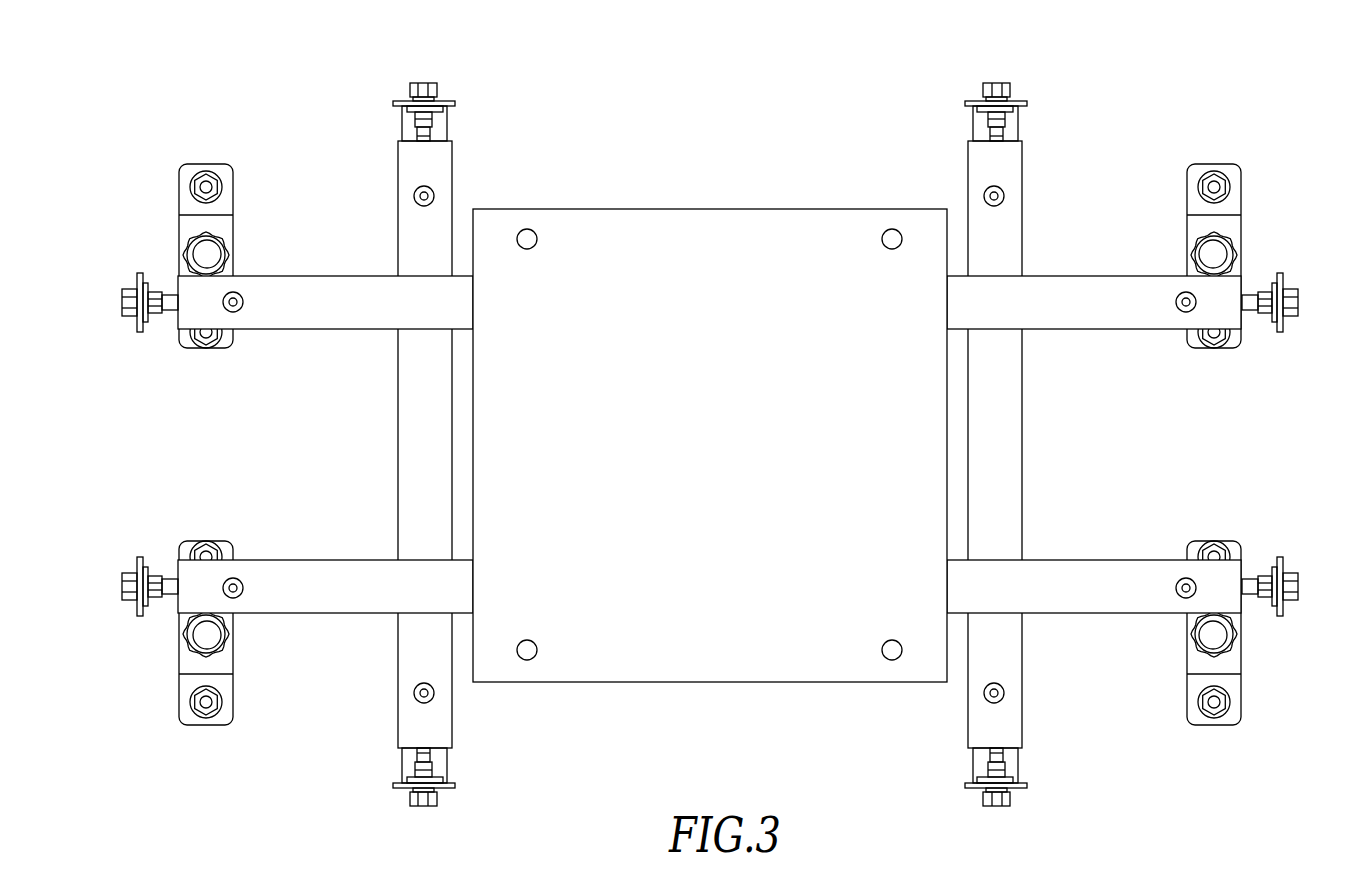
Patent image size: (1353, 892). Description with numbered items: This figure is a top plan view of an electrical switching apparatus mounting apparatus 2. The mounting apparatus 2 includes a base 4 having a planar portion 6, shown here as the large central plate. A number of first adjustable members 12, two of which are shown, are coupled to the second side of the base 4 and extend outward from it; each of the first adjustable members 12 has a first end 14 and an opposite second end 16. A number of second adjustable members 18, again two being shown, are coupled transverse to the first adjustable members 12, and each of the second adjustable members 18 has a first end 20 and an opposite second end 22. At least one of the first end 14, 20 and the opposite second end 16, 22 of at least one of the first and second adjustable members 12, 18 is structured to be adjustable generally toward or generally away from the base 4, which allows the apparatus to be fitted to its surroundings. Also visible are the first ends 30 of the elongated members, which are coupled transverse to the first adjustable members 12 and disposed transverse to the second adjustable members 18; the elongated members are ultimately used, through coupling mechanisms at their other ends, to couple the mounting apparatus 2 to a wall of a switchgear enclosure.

The electrical switching apparatus mounting apparatus 2 is at (709, 448).
The base 4 is at (710, 420).
The planar portion 6 is at (750, 221).
The first adjustable members 12 is at (1075, 289).
The first end 14 is at (1284, 323).
The opposite second end 16 is at (137, 327).
The second adjustable members 18 is at (412, 422).
The first end 20 is at (402, 794).
The opposite second end 22 is at (402, 97).
The first end 30 is at (200, 252).